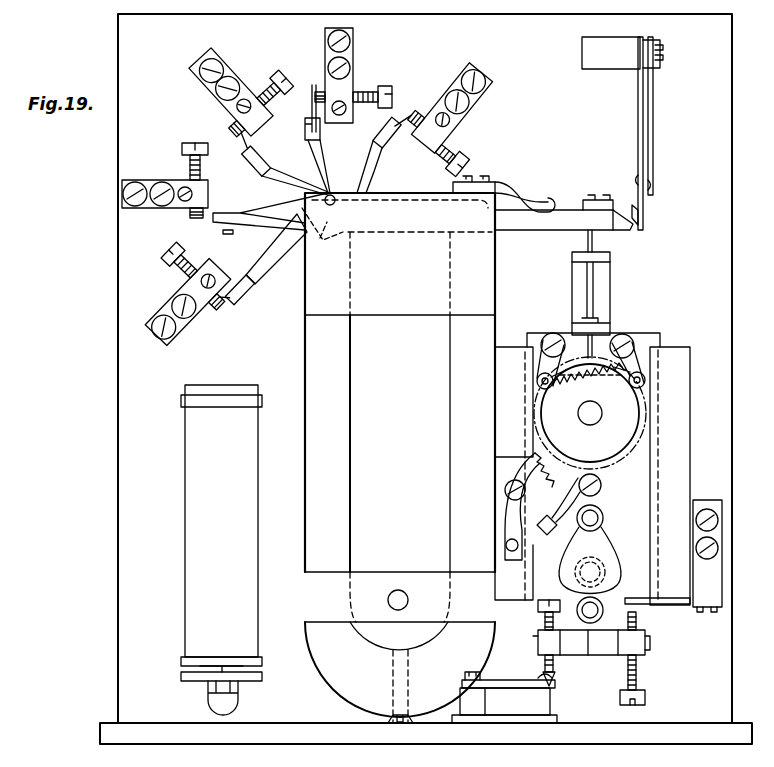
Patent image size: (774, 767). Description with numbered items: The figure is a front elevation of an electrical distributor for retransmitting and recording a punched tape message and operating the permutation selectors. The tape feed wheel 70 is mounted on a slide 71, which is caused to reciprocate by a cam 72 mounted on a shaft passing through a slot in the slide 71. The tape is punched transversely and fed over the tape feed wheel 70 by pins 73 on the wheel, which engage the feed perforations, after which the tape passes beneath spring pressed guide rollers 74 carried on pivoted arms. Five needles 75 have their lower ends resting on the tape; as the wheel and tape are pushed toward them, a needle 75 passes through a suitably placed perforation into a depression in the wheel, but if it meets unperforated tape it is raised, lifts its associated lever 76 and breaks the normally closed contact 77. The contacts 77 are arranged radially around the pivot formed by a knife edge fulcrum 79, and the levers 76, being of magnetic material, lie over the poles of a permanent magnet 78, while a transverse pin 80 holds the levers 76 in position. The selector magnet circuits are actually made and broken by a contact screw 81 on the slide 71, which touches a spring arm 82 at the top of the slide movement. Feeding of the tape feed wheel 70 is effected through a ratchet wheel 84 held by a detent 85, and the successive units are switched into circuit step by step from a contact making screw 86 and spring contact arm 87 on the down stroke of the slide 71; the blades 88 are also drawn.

The tape feed wheel 70 is at (590, 413).
The slide 71 is at (640, 468).
The cam 72 is at (606, 556).
The pins 73 is at (598, 380).
The spring pressed guide rollers 74 is at (537, 382).
The needles 75 is at (595, 292).
The lever 76 is at (562, 218).
The contact 77 is at (237, 130).
The permanent magnet 78 is at (400, 458).
The knife edge fulcrum 79 is at (323, 242).
The transverse pin 80 is at (333, 204).
The contact screw 81 is at (640, 598).
The spring arm 82 is at (666, 598).
The ratchet wheel 84 is at (536, 450).
The detent 85 is at (578, 480).
The contact making screw 86 is at (556, 676).
The spring contact arm 87 is at (530, 682).
The blades 88 is at (652, 186).